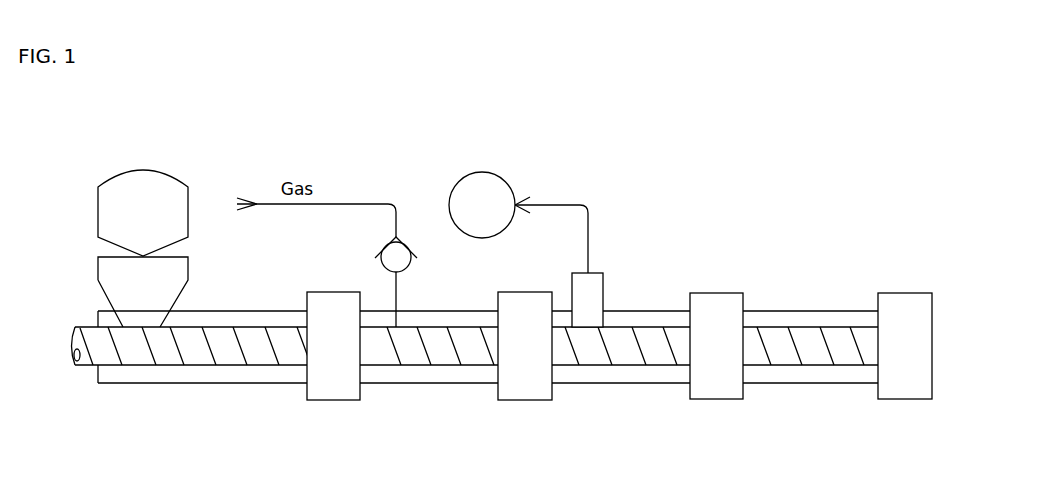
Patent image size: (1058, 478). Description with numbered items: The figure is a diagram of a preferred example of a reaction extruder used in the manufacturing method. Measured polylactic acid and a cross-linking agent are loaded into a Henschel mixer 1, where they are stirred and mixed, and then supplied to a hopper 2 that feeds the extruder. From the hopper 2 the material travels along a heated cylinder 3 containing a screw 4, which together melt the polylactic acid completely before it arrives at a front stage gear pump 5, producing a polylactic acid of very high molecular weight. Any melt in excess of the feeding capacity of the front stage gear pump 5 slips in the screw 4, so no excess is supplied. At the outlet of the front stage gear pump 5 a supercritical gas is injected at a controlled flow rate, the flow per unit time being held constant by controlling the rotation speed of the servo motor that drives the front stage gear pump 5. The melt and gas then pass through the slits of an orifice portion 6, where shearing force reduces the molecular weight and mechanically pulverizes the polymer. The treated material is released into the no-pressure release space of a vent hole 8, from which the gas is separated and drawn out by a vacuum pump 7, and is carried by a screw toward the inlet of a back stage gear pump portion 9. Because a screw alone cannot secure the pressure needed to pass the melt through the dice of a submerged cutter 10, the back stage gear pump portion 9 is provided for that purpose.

The Henschel mixer 1 is at (157, 170).
The hopper 2 is at (190, 270).
The heated cylinder 3 is at (248, 378).
The screw 4 is at (163, 356).
The front stage gear pump 5 is at (322, 383).
The orifice portion 6 is at (517, 387).
The vacuum pump 7 is at (500, 172).
The vent hole 8 is at (592, 268).
The back stage gear pump portion 9 is at (712, 392).
The submerged cutter 10 is at (895, 388).